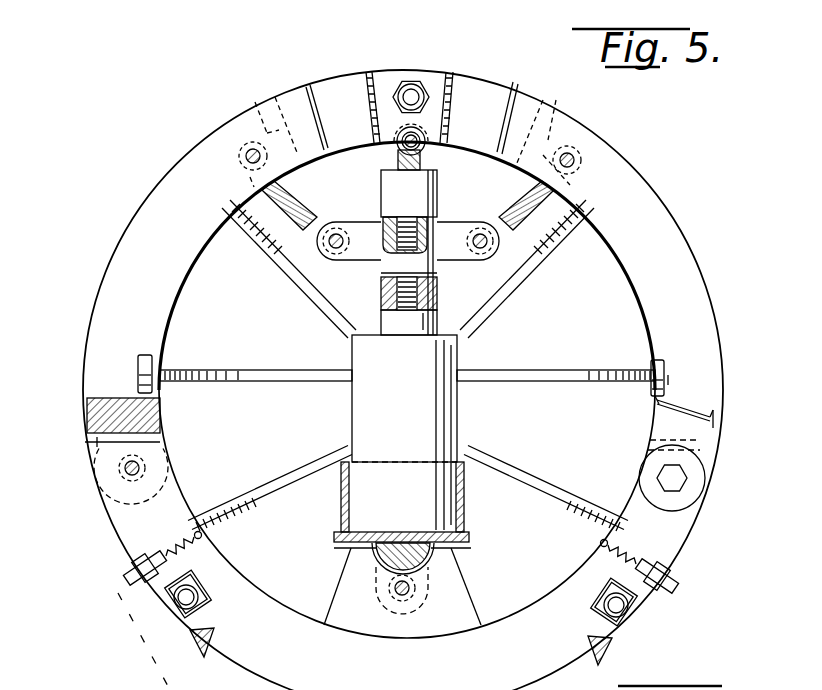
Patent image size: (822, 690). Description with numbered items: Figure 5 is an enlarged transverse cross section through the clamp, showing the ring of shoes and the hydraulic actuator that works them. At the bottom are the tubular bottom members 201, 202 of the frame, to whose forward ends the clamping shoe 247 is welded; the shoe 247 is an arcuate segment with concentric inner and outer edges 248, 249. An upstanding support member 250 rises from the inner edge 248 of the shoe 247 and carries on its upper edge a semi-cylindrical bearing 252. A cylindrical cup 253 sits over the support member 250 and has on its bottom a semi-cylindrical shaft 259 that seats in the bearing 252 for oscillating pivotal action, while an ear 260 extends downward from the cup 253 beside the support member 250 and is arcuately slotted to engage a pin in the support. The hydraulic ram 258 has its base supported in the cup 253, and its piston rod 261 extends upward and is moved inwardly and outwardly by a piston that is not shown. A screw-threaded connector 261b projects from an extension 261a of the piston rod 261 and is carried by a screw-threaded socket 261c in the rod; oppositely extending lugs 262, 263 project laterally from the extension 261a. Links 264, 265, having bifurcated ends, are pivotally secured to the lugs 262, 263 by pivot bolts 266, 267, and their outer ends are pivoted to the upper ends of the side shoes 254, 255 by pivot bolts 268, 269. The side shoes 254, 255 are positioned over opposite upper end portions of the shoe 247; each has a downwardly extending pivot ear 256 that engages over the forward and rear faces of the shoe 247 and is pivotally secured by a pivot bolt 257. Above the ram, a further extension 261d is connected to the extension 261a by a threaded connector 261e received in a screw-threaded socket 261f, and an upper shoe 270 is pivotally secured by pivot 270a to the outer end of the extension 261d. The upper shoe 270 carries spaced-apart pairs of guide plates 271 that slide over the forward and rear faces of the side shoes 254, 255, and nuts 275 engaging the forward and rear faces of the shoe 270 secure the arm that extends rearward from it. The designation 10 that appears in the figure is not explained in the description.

The pile driving apparatus 10 is at (270, 492).
The tubular bottom member 201 is at (632, 606).
The tubular bottom member 202 is at (176, 615).
The clamping shoe 247 is at (572, 683).
The inner edge 248 is at (590, 562).
The outer edge 249 is at (694, 531).
The support member 250 is at (464, 614).
The semi-cylindrical bearing 252 is at (433, 558).
The cylindrical cup 253 is at (463, 508).
The side shoe 254 is at (173, 320).
The side shoe 255 is at (641, 322).
The pivot ear 256 is at (97, 442).
The pivot bolt 257 is at (124, 479).
The hydraulic ram 258 is at (457, 428).
The semi-cylindrical shaft 259 is at (398, 532).
The ear 260 is at (402, 614).
The piston rod 261 is at (422, 321).
The extension 261a is at (382, 243).
The screw-threaded connector 261b is at (424, 297).
The screw-threaded socket 261c is at (381, 298).
The extension 261d is at (437, 196).
The threaded connector 261e is at (401, 212).
The screw-threaded socket 261f is at (431, 150).
The lug 262 is at (358, 221).
The lug 263 is at (462, 213).
The link 264 is at (262, 192).
The link 265 is at (512, 205).
The pivot bolt 266 is at (328, 241).
The pivot bolt 267 is at (488, 240).
The pivot bolt 268 is at (249, 148).
The pivot bolt 269 is at (575, 153).
The upper shoe 270 is at (441, 80).
The pivot 270a is at (425, 137).
The guide plates 271 is at (318, 84).
The nuts 275 is at (415, 80).